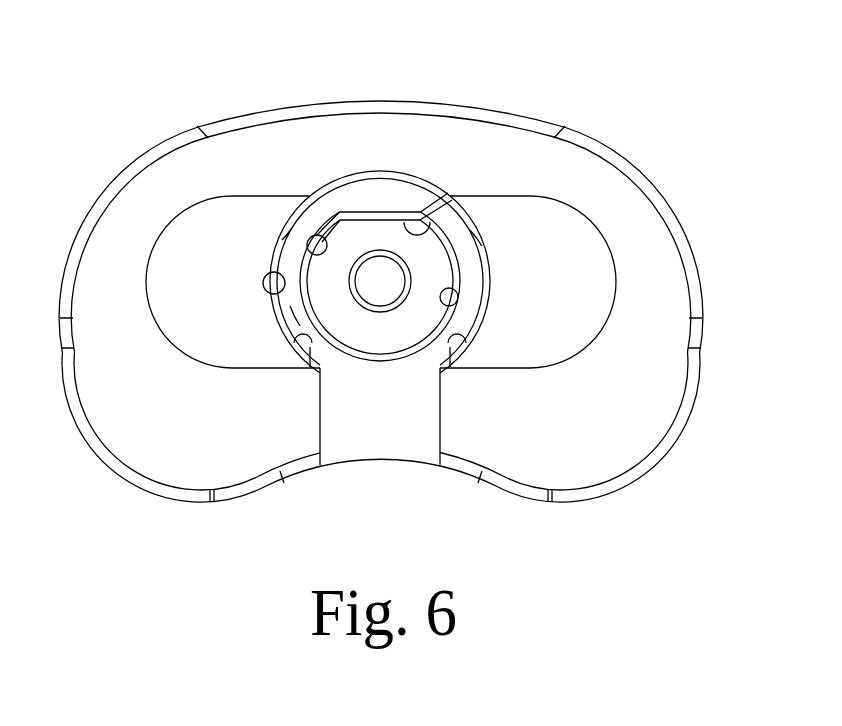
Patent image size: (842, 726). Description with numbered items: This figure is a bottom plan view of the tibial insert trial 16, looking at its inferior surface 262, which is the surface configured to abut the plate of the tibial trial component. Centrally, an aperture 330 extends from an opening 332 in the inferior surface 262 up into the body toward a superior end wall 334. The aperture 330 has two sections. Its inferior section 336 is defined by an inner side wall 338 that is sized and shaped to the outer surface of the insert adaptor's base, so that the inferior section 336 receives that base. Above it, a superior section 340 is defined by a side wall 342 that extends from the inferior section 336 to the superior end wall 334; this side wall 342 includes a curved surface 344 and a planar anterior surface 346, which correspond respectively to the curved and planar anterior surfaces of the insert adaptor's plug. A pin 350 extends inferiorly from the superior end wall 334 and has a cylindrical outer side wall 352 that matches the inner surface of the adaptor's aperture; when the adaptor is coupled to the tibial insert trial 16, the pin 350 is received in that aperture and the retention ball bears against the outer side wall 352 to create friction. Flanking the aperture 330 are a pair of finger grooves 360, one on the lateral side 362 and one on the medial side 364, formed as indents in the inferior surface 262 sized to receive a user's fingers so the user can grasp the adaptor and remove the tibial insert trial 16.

The tibial insert trial 16 is at (632, 108).
The inferior surface 262 is at (653, 263).
The aperture 330 is at (408, 318).
The opening 332 is at (402, 192).
The superior end wall 334 is at (457, 272).
The inferior section 336 is at (293, 317).
The inner side wall 338 is at (282, 283).
The superior section 340 is at (367, 240).
The side wall 342 is at (313, 195).
The curved surface 344 is at (458, 298).
The planar anterior surface 346 is at (452, 195).
The pin 350 is at (392, 306).
The outer side wall 352 is at (362, 308).
The finger grooves 360 is at (552, 335).
The lateral side 362 is at (481, 242).
The medial side 364 is at (287, 225).